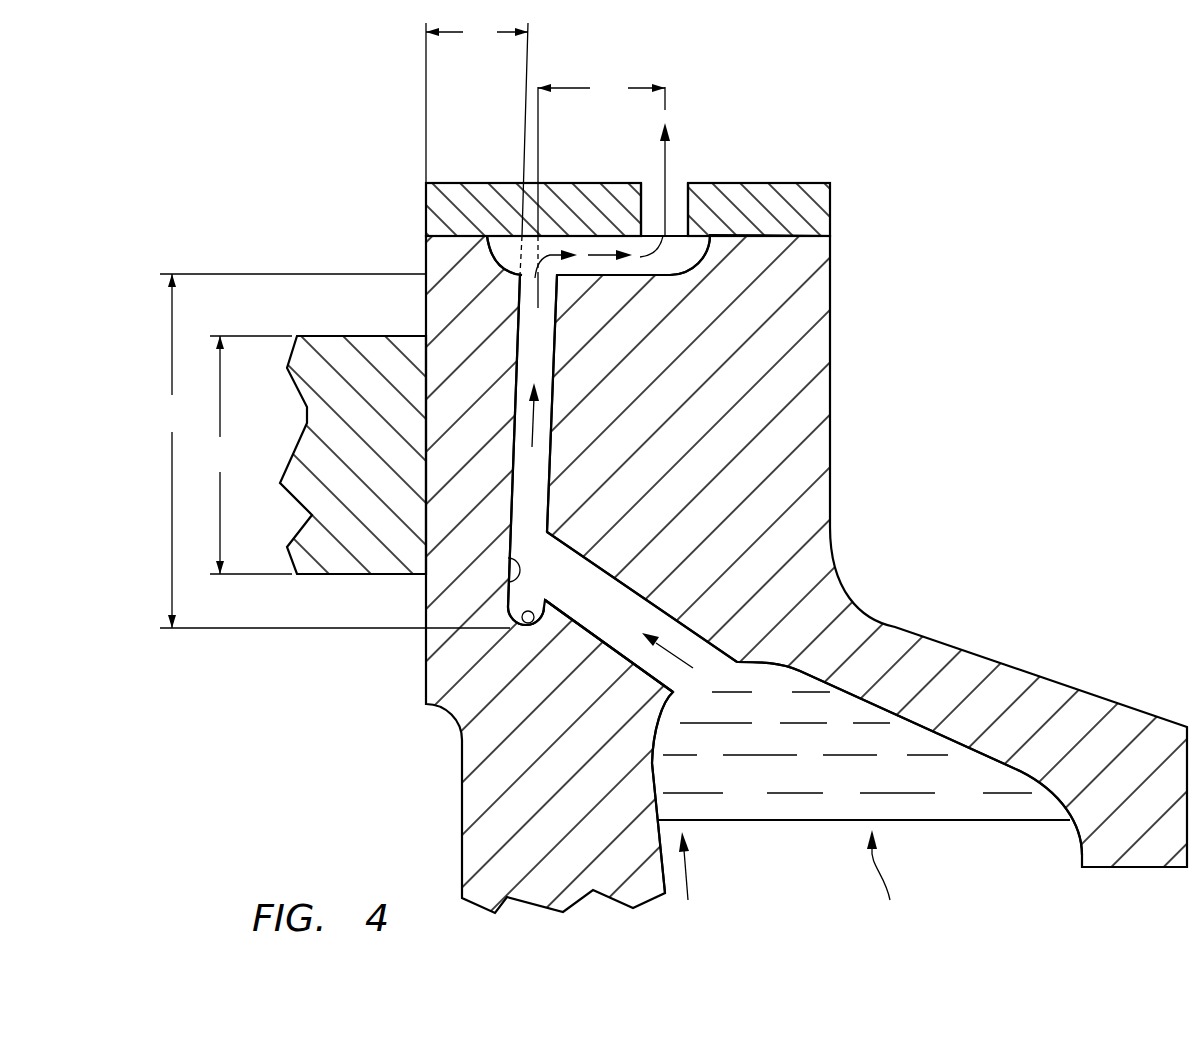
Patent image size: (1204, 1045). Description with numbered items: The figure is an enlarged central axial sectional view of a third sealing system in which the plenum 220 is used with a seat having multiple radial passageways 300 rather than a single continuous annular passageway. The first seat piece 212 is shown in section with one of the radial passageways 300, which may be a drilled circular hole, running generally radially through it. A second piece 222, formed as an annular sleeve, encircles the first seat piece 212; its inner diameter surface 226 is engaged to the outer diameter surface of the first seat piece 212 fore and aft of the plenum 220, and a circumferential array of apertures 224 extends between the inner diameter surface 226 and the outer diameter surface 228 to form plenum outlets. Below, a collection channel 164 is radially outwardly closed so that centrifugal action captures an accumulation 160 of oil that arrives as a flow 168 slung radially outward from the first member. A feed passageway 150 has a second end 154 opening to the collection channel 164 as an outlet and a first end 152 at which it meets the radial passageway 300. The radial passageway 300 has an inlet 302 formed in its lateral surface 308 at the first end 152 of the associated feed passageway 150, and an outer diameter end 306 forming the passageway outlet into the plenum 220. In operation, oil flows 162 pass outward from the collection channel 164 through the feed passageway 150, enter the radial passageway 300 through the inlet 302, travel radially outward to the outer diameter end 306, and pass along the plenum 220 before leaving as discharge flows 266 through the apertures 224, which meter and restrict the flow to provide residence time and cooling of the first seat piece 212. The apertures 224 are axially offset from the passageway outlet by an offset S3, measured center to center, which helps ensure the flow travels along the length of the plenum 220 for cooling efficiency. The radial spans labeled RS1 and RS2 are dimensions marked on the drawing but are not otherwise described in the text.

The passageway legs 150 is at (614, 643).
The first ends 152 is at (510, 627).
The second ends 154 is at (542, 633).
The accumulation of oil 160 is at (801, 783).
The oil flows 162 is at (672, 655).
The collection channel 164 is at (864, 876).
The flow 168 is at (688, 873).
The first seat piece 212 is at (773, 356).
The plenum 220 is at (607, 226).
The second piece 222 is at (792, 190).
The apertures 224 is at (678, 188).
The inner diameter surface 226 is at (777, 237).
The outer diameter surface 228 is at (473, 182).
The discharge flows 266 is at (667, 157).
The radial passageways 300 is at (548, 463).
The inlet 302 is at (528, 527).
The outer diameter end 306 is at (488, 246).
The lateral surface 308 is at (530, 611).
The offset S3 is at (601, 192).
The radial span 1 RS1 is at (244, 455).
The radial span 2 RS2 is at (327, 451).